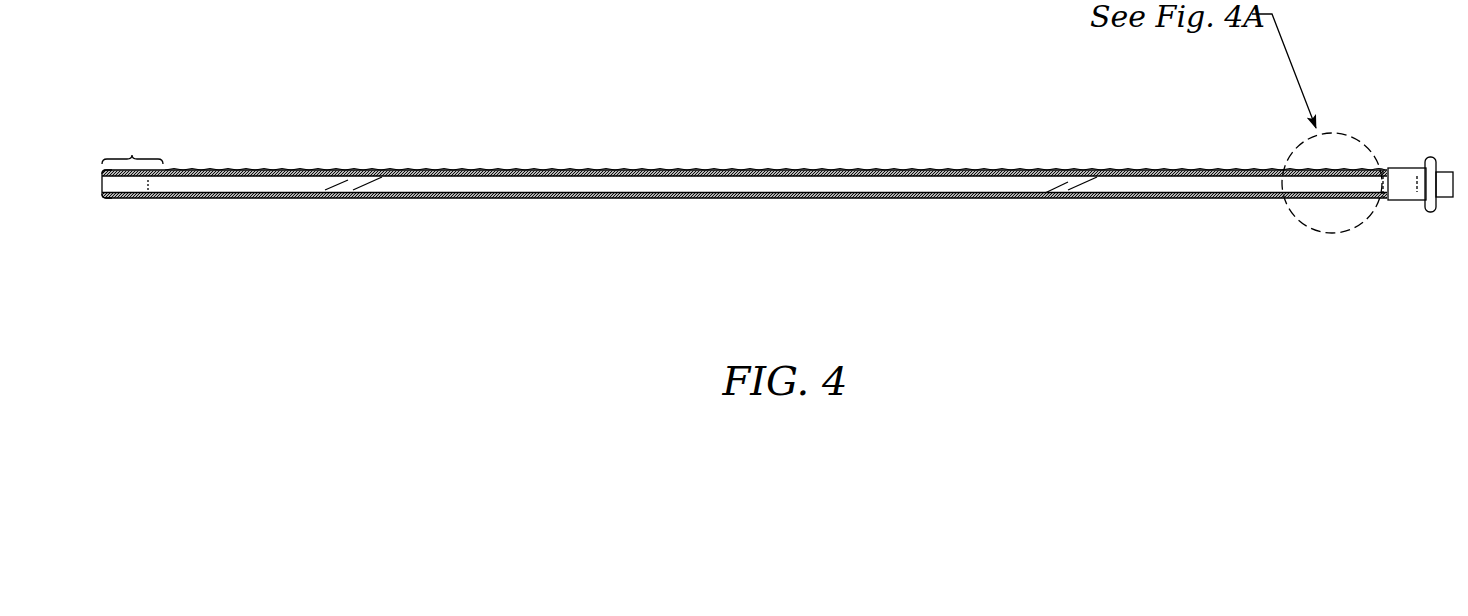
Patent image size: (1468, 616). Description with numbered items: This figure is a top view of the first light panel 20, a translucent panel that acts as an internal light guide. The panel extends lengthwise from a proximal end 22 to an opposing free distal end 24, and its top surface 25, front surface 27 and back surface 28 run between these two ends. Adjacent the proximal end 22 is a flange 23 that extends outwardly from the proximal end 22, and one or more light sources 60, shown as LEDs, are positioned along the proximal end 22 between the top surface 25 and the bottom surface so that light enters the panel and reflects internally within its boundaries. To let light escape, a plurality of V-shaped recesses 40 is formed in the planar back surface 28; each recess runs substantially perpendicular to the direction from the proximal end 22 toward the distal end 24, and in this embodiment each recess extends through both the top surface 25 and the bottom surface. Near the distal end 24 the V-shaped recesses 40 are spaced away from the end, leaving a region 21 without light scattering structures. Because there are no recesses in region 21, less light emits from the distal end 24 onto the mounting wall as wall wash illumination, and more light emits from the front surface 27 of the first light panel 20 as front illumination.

The first light panel 20 is at (921, 236).
The region 21 is at (132, 155).
The proximal end 22 is at (1394, 233).
The flange 23 is at (1430, 157).
The distal end 24 is at (100, 214).
The top surface 25 is at (423, 186).
The front surface 27 is at (665, 198).
The back surface 28 is at (660, 170).
The V-shaped recesses 40 is at (1107, 170).
The light source 60 is at (1415, 201).